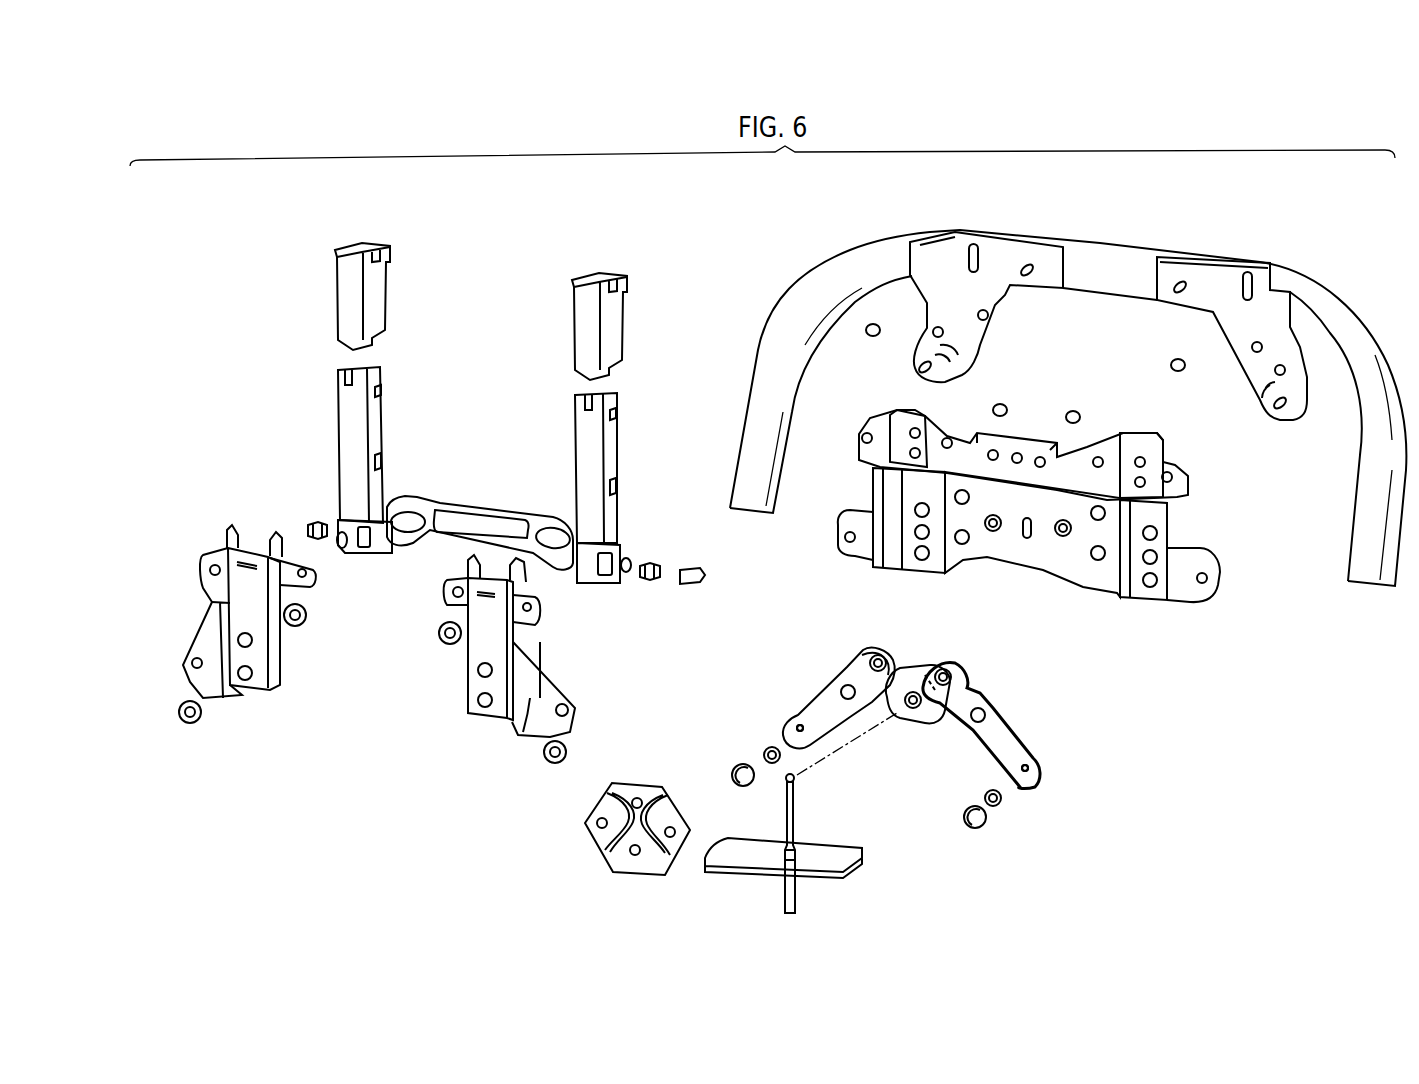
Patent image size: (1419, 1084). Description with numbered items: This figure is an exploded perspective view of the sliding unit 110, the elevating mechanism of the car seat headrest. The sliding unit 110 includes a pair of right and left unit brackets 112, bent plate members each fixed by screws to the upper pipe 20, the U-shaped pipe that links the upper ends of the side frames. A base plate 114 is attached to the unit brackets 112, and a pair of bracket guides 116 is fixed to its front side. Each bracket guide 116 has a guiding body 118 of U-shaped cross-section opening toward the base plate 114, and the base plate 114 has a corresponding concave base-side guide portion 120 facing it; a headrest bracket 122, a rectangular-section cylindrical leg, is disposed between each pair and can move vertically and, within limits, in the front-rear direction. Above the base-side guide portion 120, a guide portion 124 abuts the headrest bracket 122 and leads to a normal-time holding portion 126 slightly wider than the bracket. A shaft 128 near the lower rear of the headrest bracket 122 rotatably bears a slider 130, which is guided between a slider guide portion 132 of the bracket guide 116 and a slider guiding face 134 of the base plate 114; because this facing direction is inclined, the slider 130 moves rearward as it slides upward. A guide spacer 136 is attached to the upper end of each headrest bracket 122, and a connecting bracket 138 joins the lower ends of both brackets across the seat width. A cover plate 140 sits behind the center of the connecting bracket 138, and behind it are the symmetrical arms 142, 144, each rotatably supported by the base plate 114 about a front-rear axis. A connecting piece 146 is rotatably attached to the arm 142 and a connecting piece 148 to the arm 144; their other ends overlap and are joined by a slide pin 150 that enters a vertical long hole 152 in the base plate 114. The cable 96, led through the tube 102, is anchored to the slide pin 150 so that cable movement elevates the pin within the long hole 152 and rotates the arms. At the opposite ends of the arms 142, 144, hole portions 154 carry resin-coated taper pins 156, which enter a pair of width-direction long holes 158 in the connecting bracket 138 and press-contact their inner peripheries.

The upper pipe 20 is at (850, 273).
The cable 96 is at (797, 810).
The tube 102 is at (797, 893).
The sliding unit 110 is at (1178, 714).
The unit bracket 112 is at (1002, 262).
The base plate 114 is at (1010, 543).
The bracket guide 116 is at (200, 612).
The guiding body 118 is at (268, 638).
The base-side guide portion 120 is at (912, 490).
The headrest bracket 122 is at (345, 425).
The guide portion 124 is at (875, 468).
The normal-time holding portion 126 is at (895, 428).
The shaft 128 is at (338, 548).
The slider 130 is at (312, 522).
The slider guide portion 132 is at (228, 688).
The slider guiding face 134 is at (875, 563).
The guide spacer 136 is at (380, 307).
The connecting bracket 138 is at (483, 522).
The cover plate 140 is at (625, 865).
The arm 142 is at (845, 690).
The arm 144 is at (1005, 735).
The connecting piece 146 is at (915, 665).
The connecting piece 148 is at (938, 718).
The slide pin 150 is at (797, 777).
The long hole 152 is at (1040, 538).
The hole portion 154 is at (795, 727).
The taper pin 156 is at (760, 750).
The long hole 158 is at (413, 517).